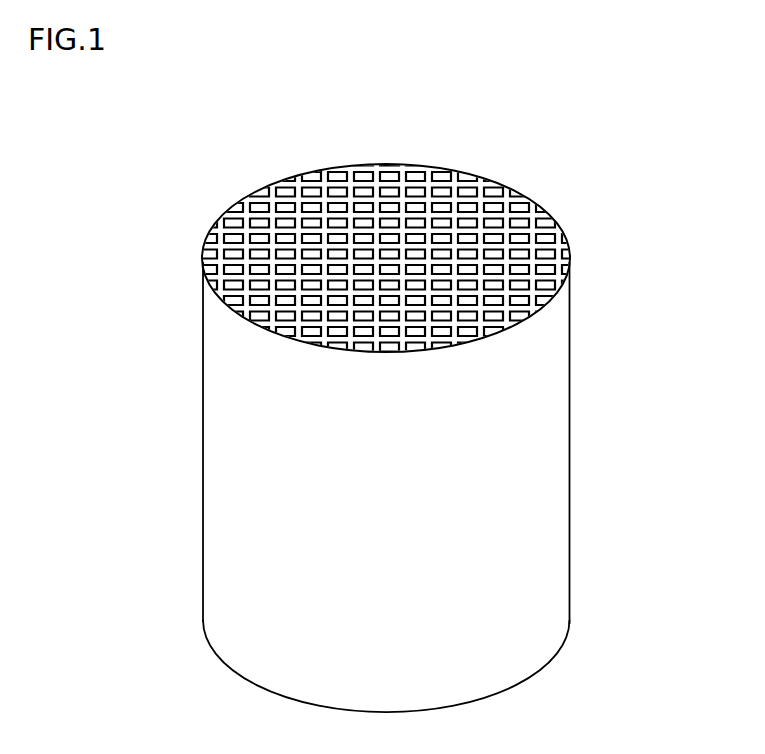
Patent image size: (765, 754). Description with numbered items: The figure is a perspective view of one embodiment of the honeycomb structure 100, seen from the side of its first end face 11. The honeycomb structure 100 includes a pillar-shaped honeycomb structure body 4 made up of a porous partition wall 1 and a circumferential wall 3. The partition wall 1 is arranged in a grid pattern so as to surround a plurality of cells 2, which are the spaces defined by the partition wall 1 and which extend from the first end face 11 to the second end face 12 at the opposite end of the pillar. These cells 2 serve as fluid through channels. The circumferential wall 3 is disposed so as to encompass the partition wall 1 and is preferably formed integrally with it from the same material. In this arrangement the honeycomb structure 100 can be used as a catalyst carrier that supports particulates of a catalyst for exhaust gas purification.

The honeycomb structure 100 is at (671, 54).
The partition wall 1 is at (489, 227).
The cells 2 is at (527, 252).
The circumferential wall 3 is at (540, 383).
The honeycomb structure body 4 is at (573, 302).
The first end face 11 is at (277, 183).
The second end face 12 is at (226, 676).